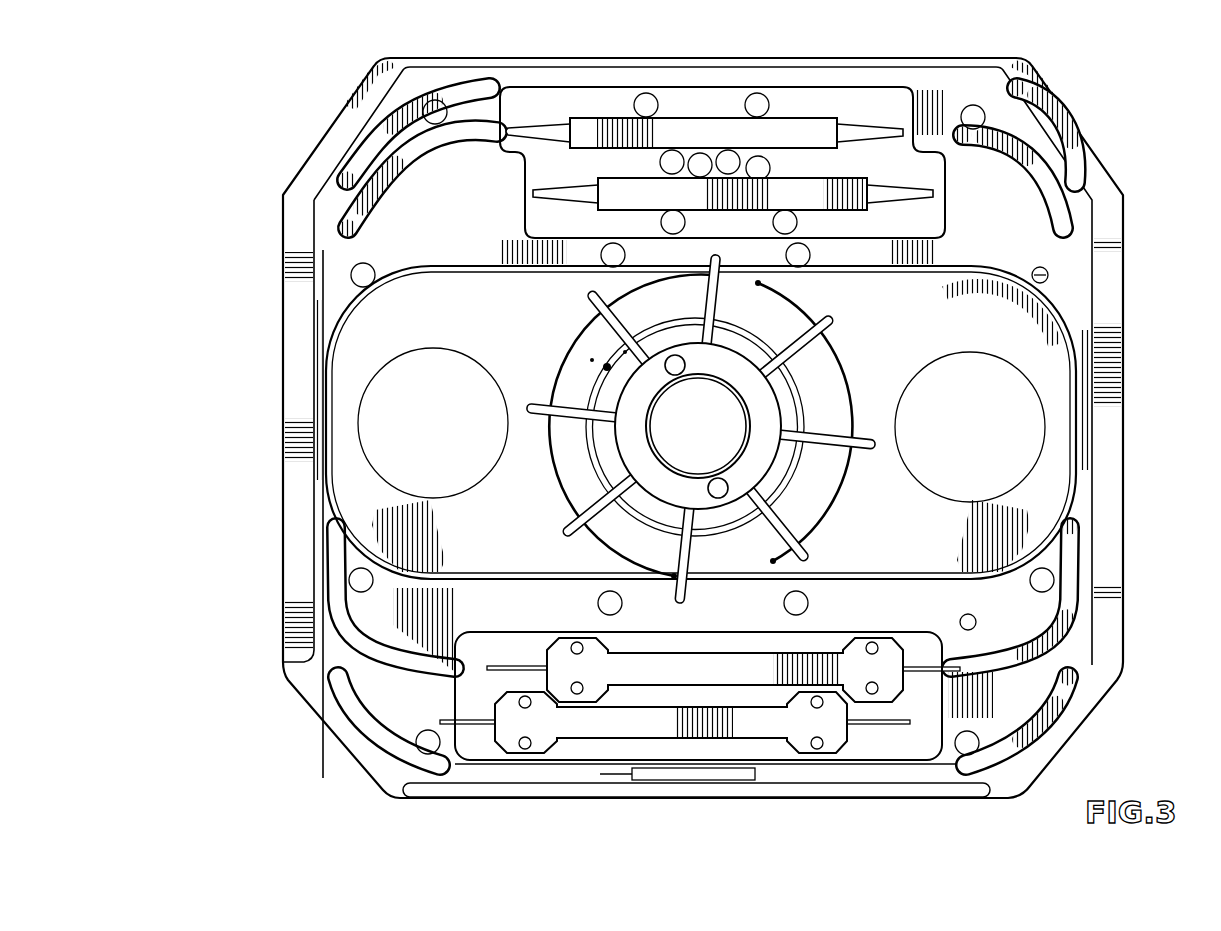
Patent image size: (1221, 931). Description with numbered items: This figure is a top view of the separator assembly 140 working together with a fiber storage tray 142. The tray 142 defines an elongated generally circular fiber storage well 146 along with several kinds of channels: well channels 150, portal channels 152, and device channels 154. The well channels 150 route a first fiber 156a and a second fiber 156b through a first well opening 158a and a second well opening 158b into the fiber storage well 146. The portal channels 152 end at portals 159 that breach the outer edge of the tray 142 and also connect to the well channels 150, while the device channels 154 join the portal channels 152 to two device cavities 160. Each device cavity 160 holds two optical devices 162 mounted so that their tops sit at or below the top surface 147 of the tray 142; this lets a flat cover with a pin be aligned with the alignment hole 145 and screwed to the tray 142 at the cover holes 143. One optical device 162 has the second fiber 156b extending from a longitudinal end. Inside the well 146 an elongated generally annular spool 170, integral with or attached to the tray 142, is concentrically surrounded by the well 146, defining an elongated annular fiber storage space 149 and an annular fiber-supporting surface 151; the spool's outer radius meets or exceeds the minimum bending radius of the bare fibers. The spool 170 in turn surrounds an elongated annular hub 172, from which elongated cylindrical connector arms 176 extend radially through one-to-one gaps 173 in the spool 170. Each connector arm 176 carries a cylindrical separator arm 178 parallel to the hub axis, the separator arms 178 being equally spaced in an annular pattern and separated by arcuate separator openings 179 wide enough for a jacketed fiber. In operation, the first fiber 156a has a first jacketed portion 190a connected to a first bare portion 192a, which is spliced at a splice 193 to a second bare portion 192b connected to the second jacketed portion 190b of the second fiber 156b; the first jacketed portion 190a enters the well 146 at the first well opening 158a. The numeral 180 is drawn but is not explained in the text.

The separator assembly 140 is at (723, 428).
The fiber storage tray 142 is at (1120, 447).
The cover holes 143 is at (1048, 277).
The alignment hole 145 is at (978, 620).
The fiber storage well 146 is at (820, 373).
The top surface 147 is at (368, 348).
The fiber storage space 149 is at (581, 478).
The well channels 150 is at (890, 574).
The fiber-supporting surface 151 is at (580, 488).
The portal channels 152 is at (1080, 498).
The device channels 154 is at (1055, 218).
The first fiber 156a is at (320, 750).
The second fiber 156b is at (507, 130).
The first well opening 158a is at (657, 297).
The second well opening 158b is at (643, 560).
The portals 159 is at (312, 690).
The device cavities 160 is at (913, 748).
The optical devices 162 is at (797, 190).
The spool 170 is at (758, 426).
The hub 172 is at (835, 520).
The gaps 173 is at (822, 330).
The connector arms 176 is at (625, 352).
The separator arms 178 is at (779, 550).
The separator openings 179 is at (818, 334).
The spoke 180 is at (579, 503).
The first jacketed portion 190a is at (753, 283).
The second jacketed portion 190b is at (765, 564).
The first bare portion 192a is at (577, 340).
The second bare portion 192b is at (610, 304).
The splice 193 is at (592, 360).